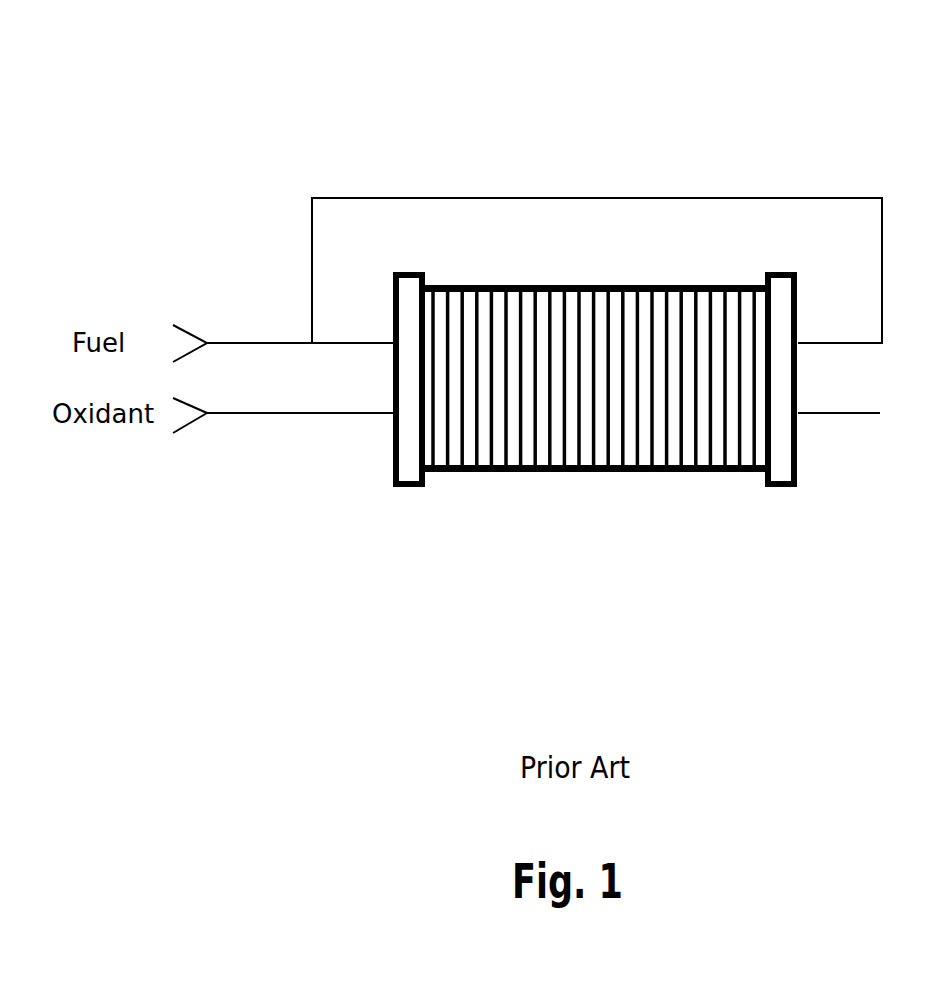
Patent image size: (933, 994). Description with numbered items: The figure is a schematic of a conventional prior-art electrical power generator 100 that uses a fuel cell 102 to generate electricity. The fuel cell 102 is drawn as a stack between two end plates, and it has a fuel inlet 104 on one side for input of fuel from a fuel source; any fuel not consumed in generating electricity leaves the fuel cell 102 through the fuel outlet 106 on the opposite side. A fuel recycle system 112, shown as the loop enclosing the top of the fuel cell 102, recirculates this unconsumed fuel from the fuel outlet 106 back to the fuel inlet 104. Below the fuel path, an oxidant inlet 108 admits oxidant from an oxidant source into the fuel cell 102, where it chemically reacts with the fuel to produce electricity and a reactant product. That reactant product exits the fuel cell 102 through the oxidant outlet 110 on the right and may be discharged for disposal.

The electrical power generator 100 is at (766, 102).
The fuel cell 102 is at (588, 284).
The fuel inlet 104 is at (393, 340).
The fuel outlet 106 is at (798, 342).
The oxidant inlet 108 is at (390, 417).
The oxidant outlet 110 is at (798, 413).
The fuel recycle system 112 is at (488, 160).